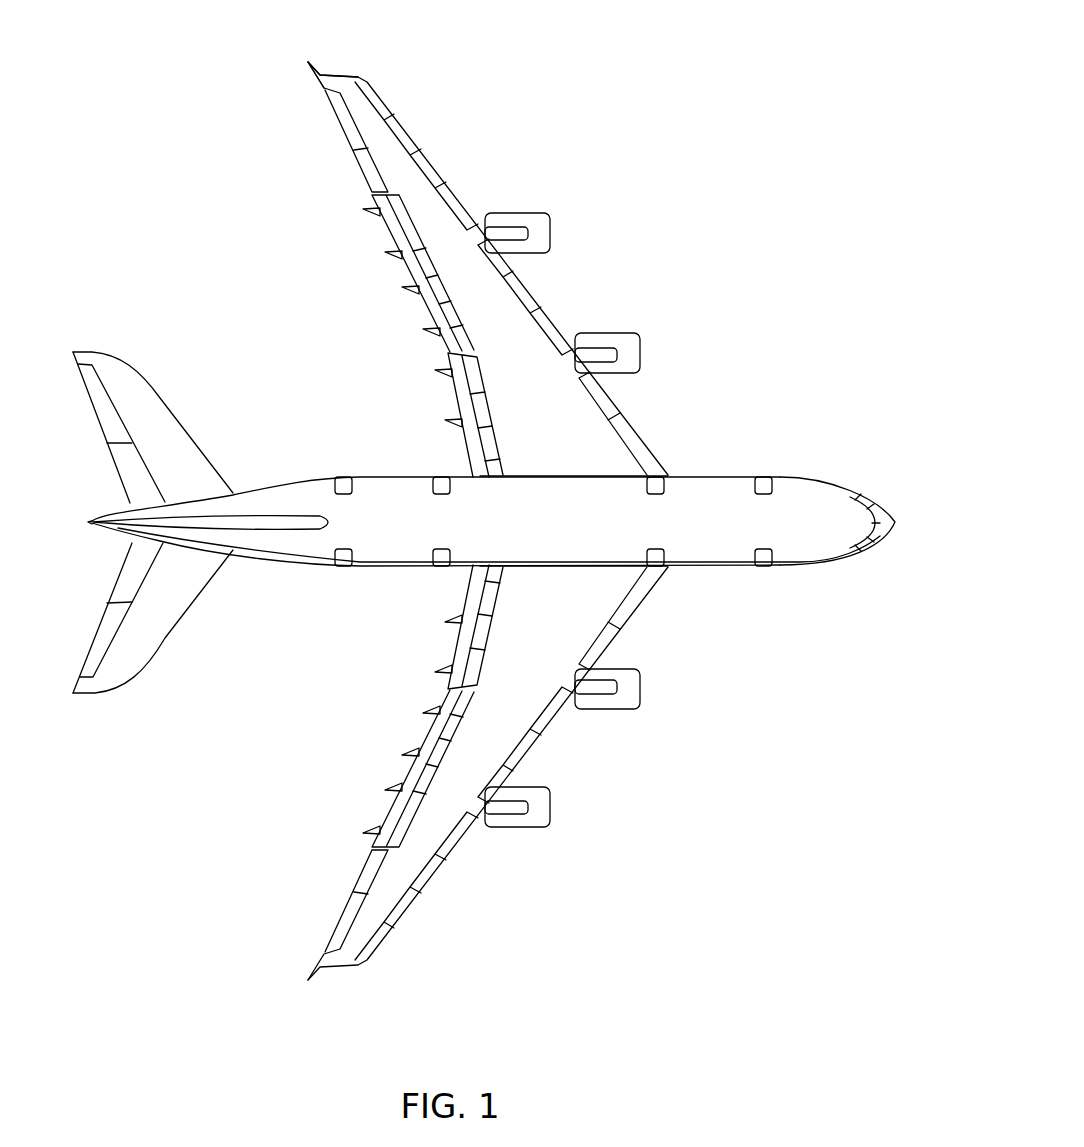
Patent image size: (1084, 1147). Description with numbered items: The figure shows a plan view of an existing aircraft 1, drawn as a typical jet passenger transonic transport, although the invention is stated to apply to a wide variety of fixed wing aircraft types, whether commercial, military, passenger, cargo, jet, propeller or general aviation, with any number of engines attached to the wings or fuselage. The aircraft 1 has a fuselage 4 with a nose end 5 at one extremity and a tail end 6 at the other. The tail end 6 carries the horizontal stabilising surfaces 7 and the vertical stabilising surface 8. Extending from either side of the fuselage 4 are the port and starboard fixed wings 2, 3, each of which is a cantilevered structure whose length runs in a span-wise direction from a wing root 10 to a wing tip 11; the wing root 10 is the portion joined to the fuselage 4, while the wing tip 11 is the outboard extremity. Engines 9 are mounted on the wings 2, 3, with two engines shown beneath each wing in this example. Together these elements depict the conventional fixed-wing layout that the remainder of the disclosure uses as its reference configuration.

The aircraft 1 is at (760, 183).
The port fixed wing 2 is at (500, 308).
The starboard fixed wing 3 is at (505, 698).
The fuselage 4 is at (393, 492).
The nose end 5 is at (895, 520).
The tail end 6 is at (91, 526).
The horizontal stabilising surfaces 7 is at (167, 433).
The vertical stabilising surface 8 is at (232, 523).
The engines 9 is at (533, 227).
The wing root 10 is at (580, 472).
The wing tip 11 is at (312, 59).